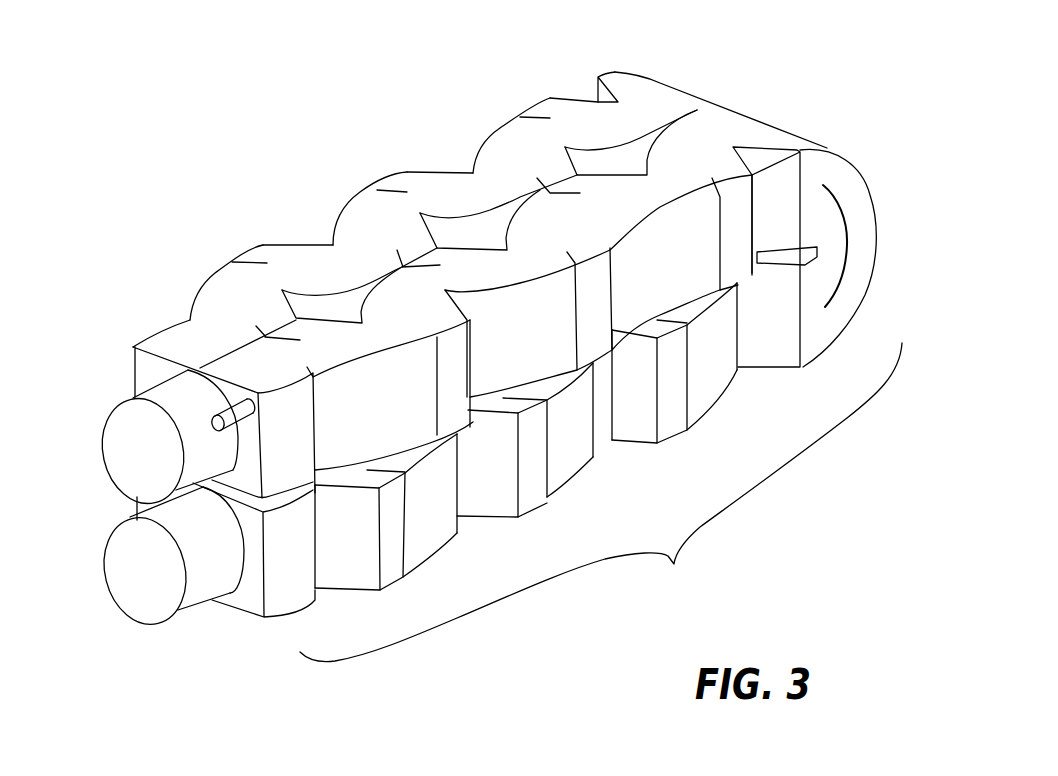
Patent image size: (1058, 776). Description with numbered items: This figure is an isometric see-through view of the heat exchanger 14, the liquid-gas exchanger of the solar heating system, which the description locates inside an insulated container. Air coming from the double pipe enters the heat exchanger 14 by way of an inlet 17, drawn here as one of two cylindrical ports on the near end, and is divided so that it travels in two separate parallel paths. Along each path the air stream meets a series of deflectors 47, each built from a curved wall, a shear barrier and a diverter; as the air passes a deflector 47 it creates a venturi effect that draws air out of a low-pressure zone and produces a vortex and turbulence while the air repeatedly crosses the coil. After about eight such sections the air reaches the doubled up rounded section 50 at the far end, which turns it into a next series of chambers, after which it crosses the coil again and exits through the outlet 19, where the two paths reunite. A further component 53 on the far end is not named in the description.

The heat exchanger 14 is at (601, 502).
The inlet 17 is at (142, 460).
The outlet 19 is at (138, 570).
The deflector 47 is at (237, 240).
The doubled up rounded section 50 is at (864, 228).
The end plate 53 is at (840, 207).